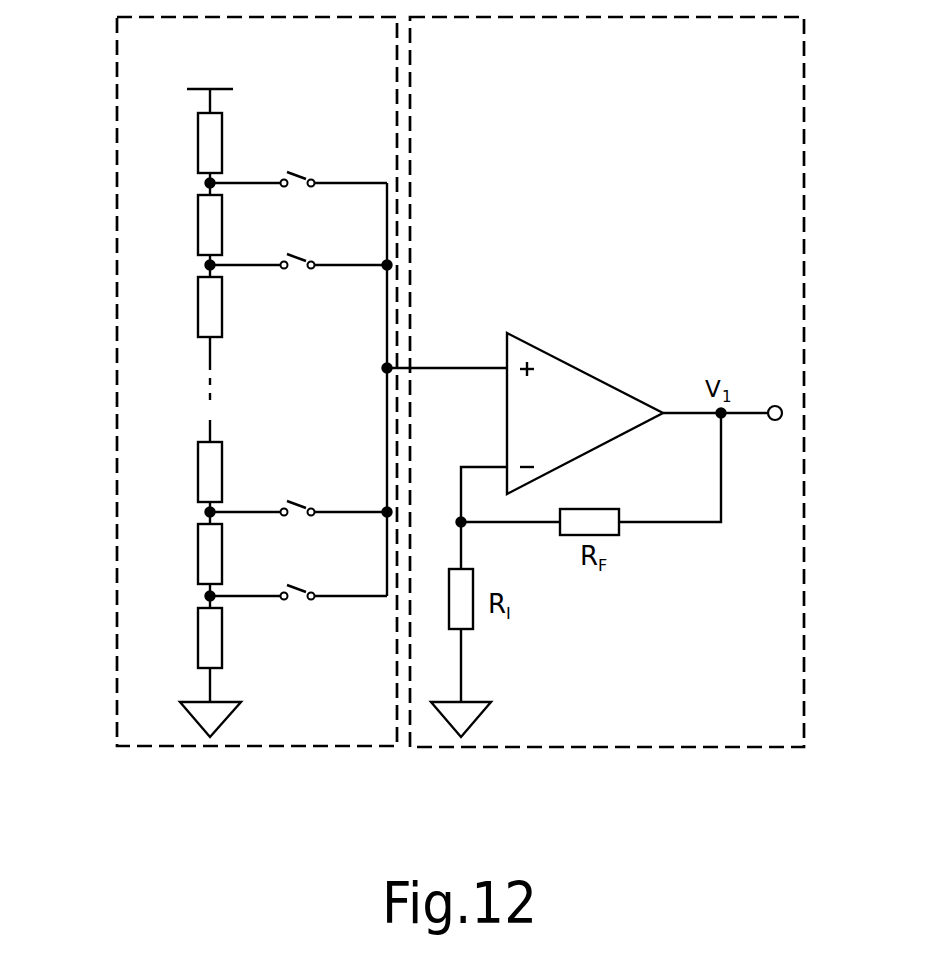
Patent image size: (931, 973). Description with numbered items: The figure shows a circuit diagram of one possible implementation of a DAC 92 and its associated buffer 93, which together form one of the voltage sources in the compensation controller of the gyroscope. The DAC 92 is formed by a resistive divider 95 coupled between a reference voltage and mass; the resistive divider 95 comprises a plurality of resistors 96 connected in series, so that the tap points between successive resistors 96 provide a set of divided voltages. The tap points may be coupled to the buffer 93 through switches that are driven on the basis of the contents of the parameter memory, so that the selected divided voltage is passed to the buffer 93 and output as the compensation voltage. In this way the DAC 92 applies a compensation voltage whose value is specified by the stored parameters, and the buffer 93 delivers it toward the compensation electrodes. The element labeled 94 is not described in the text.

The DAC 92 is at (128, 363).
The buffer 93 is at (763, 153).
The resistor string 94 is at (177, 595).
The resistive divider 95 is at (205, 130).
The resistors 96 is at (300, 258).